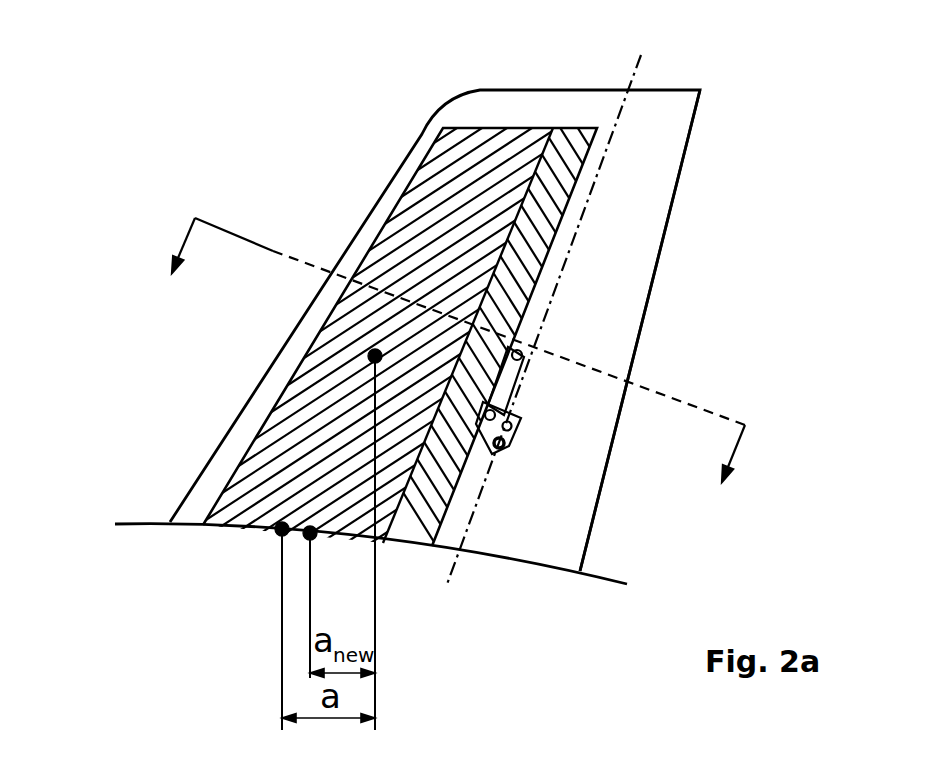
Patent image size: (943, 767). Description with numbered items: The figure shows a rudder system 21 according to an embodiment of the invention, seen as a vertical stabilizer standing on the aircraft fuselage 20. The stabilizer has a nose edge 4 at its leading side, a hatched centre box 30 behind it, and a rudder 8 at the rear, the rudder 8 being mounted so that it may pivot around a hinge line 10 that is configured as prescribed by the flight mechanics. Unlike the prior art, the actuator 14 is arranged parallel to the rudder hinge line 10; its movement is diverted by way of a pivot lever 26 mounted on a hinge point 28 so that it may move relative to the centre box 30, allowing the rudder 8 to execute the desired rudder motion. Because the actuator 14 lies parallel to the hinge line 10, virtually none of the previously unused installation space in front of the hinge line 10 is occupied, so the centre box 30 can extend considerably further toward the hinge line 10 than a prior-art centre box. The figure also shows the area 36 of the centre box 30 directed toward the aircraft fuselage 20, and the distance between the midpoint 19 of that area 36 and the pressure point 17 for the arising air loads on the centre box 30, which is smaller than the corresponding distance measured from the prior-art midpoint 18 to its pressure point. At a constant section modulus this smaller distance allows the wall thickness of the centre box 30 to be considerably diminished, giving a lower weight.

The rudder system 21 is at (389, 102).
The nose edge 4 is at (360, 250).
The centre box 30 is at (407, 213).
The area directed toward the aircraft fuselage 36 is at (394, 555).
The hinge line 10 is at (640, 62).
The rudder 8 is at (657, 172).
The actuator 14 is at (502, 390).
The hinge point 28 is at (512, 428).
The pivot lever 26 is at (510, 442).
The pressure point 17 is at (368, 362).
The aircraft fuselage 20 is at (143, 523).
The midpoint 18 is at (280, 531).
The midpoint 19 is at (327, 558).